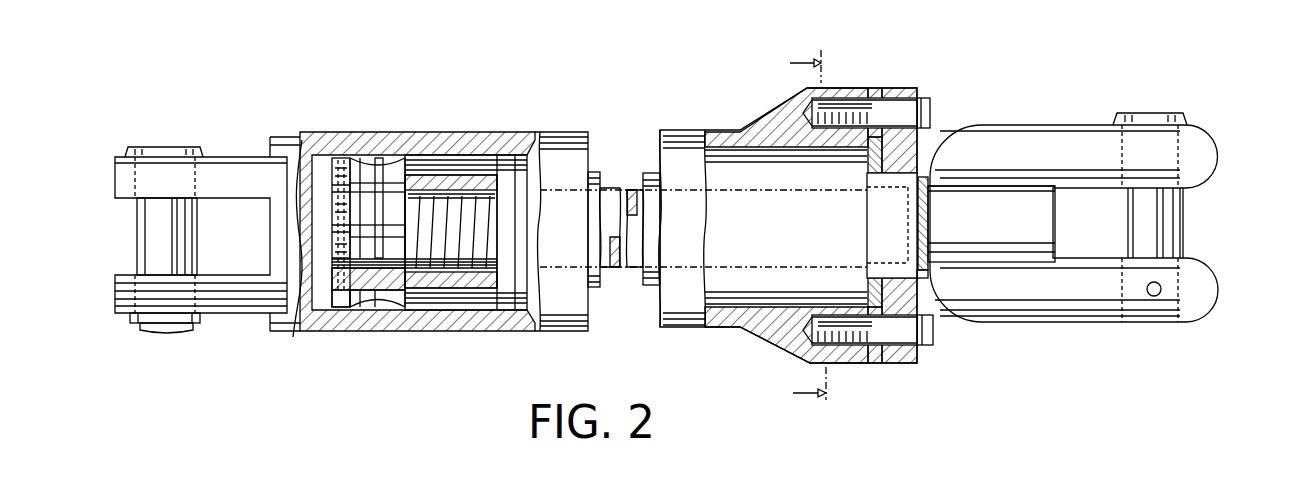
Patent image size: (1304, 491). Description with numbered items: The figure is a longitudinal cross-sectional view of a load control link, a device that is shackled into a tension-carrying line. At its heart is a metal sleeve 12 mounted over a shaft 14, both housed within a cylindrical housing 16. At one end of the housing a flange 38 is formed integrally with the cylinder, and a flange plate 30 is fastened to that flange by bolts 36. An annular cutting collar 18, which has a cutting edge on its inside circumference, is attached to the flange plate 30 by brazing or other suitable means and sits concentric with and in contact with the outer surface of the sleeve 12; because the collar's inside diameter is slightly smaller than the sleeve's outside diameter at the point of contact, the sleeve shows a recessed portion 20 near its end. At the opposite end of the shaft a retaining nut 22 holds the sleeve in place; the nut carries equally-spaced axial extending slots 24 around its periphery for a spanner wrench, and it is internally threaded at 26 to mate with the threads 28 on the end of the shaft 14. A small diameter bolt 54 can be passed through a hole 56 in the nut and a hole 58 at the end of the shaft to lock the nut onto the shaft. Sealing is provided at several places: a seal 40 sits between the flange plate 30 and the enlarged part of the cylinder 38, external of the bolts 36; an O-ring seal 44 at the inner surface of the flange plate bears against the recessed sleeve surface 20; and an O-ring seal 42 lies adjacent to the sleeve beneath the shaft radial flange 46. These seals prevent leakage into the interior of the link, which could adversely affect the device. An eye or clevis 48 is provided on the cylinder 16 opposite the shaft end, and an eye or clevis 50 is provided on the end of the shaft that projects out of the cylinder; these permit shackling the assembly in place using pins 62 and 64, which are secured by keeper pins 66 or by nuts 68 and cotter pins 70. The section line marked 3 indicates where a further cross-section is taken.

The metal sleeve 12 is at (650, 170).
The shaft 14 is at (607, 190).
The cylindrical housing 16 is at (487, 138).
The annular cutting collar 18 is at (890, 150).
The recessed portion 20 is at (932, 183).
The retaining nut 22 is at (368, 165).
The axial extending slots 24 is at (375, 197).
The internal threads 26 is at (380, 267).
The threads 28 is at (437, 263).
The flange plate 30 is at (917, 363).
The bolts 36 is at (927, 100).
The flange 38 is at (855, 363).
The seal 40 is at (872, 95).
The O-ring seal 42 is at (920, 205).
The O-ring seal 44 is at (918, 293).
The shaft radial flange 46 is at (930, 230).
The eye or clevis 48 is at (127, 313).
The eye or clevis 50 is at (1205, 137).
The small diameter bolt 54 is at (342, 160).
The hole 56 is at (333, 187).
The hole 58 is at (290, 252).
The pin 62 is at (1183, 222).
The pin 64 is at (137, 213).
The keeper pins 66 is at (1155, 297).
The nuts 68 is at (145, 323).
The cotter pins 70 is at (173, 333).
The section line 3- 3 is at (807, 228).